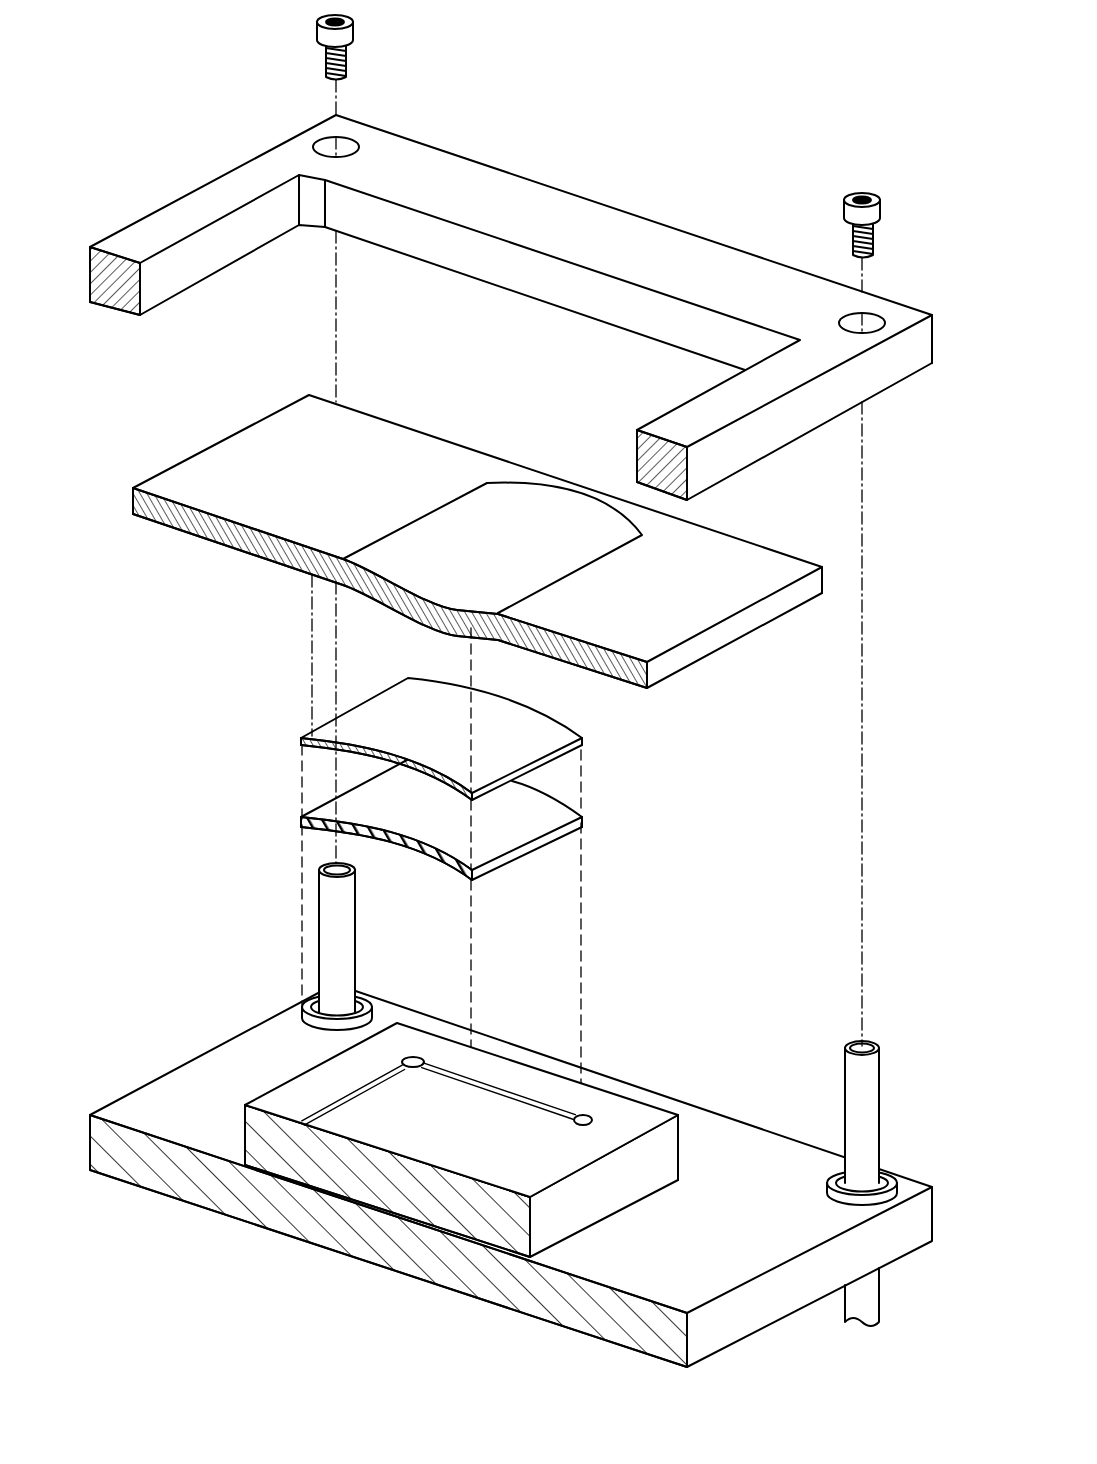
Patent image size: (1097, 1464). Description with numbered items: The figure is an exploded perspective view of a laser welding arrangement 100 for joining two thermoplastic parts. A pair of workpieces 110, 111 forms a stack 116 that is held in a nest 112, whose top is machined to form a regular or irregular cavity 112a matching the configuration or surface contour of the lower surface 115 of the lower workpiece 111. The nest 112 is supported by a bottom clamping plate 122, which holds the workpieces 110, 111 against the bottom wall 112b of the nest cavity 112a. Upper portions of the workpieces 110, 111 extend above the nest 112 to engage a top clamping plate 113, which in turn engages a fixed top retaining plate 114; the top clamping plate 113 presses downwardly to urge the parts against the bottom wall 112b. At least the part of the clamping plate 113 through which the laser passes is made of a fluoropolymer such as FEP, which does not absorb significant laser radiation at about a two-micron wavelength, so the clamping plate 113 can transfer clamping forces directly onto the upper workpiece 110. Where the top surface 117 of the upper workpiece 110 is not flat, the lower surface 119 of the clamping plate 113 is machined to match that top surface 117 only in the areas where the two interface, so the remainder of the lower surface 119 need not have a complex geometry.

The laser welding arrangement 100 is at (738, 65).
The stack 116 is at (187, 385).
The fixed top retaining plate 114 is at (735, 452).
The top clamping plate 113 is at (695, 646).
The lower surface of the clamping plate 119 is at (395, 586).
The top surface of the upper workpiece 117 is at (338, 728).
The upper workpiece 110 is at (552, 763).
The lower workpiece 111 is at (532, 847).
The lower surface of the lower workpiece 115 is at (402, 855).
The nest 112 is at (662, 1152).
The nest cavity 112a is at (355, 1122).
The bottom wall of the nest 112b is at (328, 1123).
The bottom clamping plate 122 is at (748, 1323).